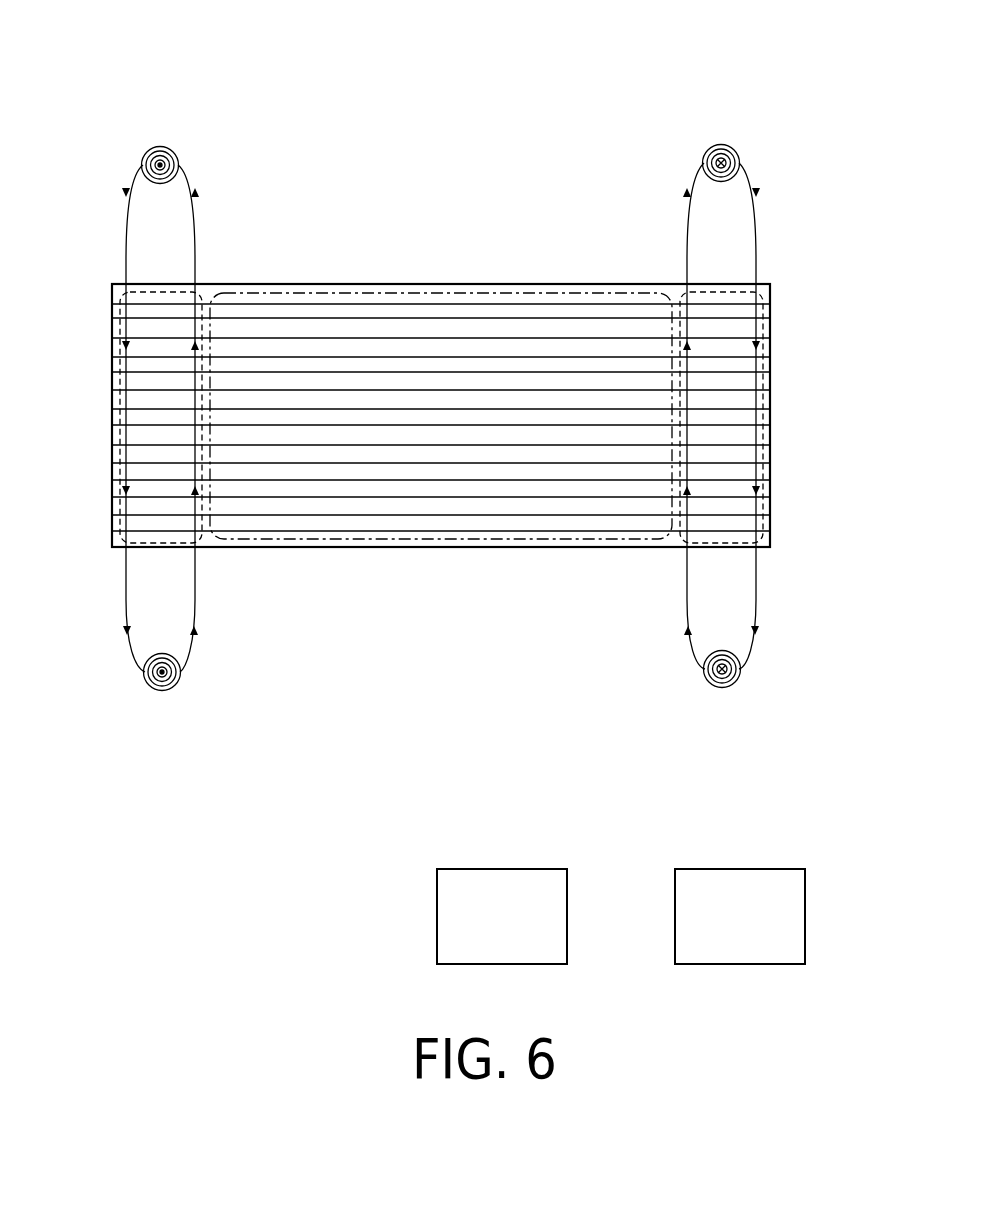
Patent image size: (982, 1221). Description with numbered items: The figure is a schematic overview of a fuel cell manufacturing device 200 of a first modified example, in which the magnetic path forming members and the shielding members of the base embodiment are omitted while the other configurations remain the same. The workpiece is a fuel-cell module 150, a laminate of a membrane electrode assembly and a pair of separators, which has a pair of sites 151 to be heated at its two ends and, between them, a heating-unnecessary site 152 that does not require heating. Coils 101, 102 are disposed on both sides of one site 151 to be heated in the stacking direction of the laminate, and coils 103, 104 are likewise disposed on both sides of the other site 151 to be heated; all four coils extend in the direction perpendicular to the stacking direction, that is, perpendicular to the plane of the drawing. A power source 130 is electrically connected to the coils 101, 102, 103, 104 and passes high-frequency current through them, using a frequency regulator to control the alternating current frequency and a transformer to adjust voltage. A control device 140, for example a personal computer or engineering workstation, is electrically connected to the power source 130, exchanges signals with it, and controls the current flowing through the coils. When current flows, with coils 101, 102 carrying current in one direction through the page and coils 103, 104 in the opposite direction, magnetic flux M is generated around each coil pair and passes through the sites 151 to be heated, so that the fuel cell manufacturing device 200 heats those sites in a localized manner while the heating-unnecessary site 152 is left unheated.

The fuel cell manufacturing device 200 is at (87, 37).
The coil 101 is at (150, 148).
The coil 102 is at (152, 688).
The coil 103 is at (727, 153).
The coil 104 is at (730, 686).
The power source 130 is at (498, 878).
The control device 140 is at (738, 878).
The fuel-cell module 150 is at (103, 318).
The site to be heated 151 is at (120, 453).
The heating-unnecessary site 152 is at (410, 288).
The magnetic flux M is at (126, 243).